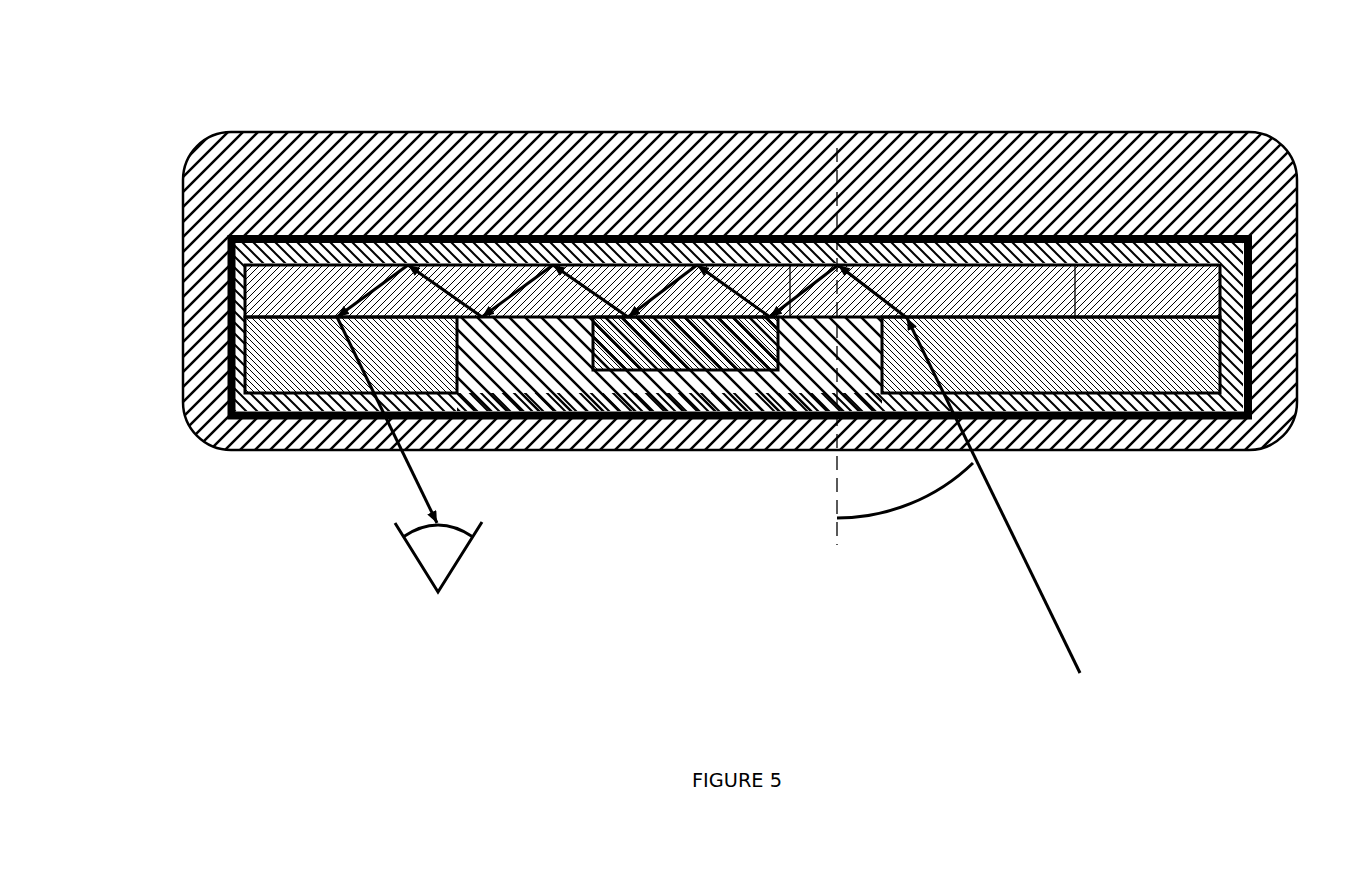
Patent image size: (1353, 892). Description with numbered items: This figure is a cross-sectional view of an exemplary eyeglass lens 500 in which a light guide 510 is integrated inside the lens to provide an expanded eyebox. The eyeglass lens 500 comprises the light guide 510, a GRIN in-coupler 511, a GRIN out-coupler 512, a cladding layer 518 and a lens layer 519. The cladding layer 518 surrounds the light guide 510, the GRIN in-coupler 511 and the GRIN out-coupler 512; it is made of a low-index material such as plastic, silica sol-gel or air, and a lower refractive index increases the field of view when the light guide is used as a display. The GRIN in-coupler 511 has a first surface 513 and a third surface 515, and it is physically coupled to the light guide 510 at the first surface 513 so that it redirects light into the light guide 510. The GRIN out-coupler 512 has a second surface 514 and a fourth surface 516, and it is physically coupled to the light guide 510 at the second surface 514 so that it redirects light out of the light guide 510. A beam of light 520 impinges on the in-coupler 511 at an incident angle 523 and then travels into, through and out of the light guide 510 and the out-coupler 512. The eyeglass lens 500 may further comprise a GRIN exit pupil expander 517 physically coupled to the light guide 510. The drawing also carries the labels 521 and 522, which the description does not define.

The eyeglass lens 500 is at (313, 607).
The light guide 510 is at (287, 300).
The GRIN in-coupler 511 is at (1183, 342).
The GRIN out-coupler 512 is at (258, 345).
The first surface 513 is at (1075, 317).
The second surface 514 is at (312, 317).
The third surface 515 is at (1077, 400).
The fourth surface 516 is at (312, 396).
The GRIN exit pupil expander 517 is at (665, 345).
The cladding layer 518 is at (1232, 400).
The lens layer 519 is at (243, 190).
The beam of light 520 is at (1020, 550).
The region 521 is at (790, 317).
The output light ray 522 is at (405, 455).
The incident angle 523 is at (948, 490).